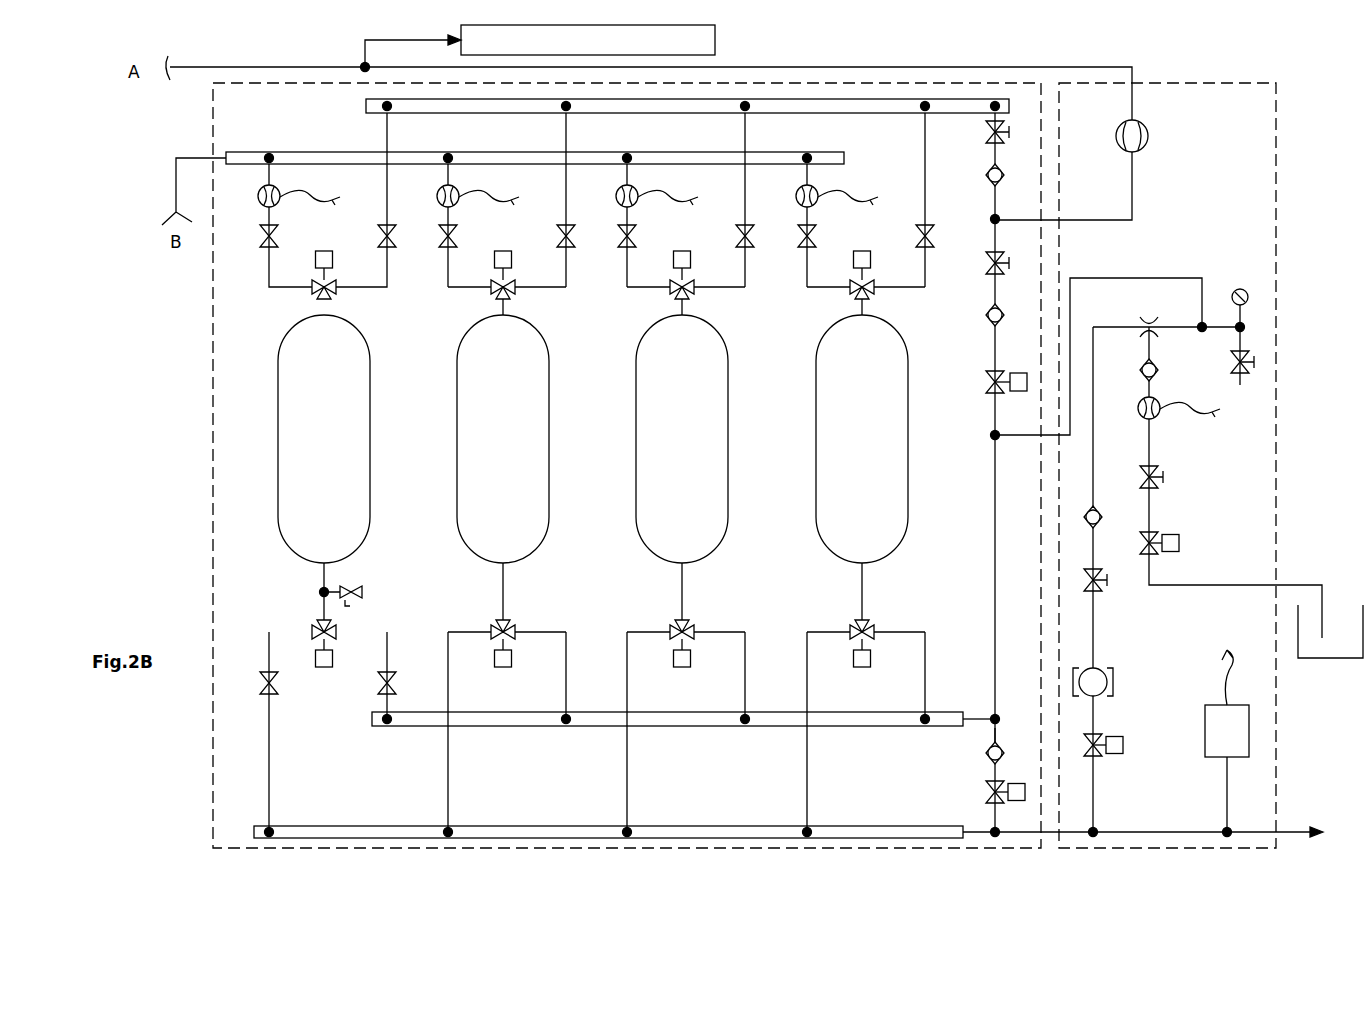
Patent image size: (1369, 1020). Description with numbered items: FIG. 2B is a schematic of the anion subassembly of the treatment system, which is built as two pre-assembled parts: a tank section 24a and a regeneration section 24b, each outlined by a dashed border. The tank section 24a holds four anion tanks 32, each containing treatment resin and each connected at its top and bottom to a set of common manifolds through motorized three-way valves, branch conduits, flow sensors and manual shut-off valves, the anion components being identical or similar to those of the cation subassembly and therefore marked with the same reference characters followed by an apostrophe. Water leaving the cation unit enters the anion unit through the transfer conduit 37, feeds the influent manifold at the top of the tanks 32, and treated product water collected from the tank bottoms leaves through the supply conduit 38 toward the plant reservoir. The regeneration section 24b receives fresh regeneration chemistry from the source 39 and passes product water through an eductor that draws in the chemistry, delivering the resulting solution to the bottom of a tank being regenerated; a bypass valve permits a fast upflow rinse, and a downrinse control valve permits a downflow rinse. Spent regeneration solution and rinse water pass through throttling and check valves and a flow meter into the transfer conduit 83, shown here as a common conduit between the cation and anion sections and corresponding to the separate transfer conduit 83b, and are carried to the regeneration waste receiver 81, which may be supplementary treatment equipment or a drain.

The transfer conduit 83 is at (365, 51).
The waste receiver 81 is at (715, 42).
The transfer conduit 83b is at (793, 67).
The tank section 24a is at (878, 82).
The regeneration section 24b is at (1278, 205).
The transfer conduit 37 is at (176, 188).
The anion tank 32 is at (338, 465).
The source of regeneration chemistry 39 is at (1343, 578).
The supply conduit 38 is at (1294, 828).